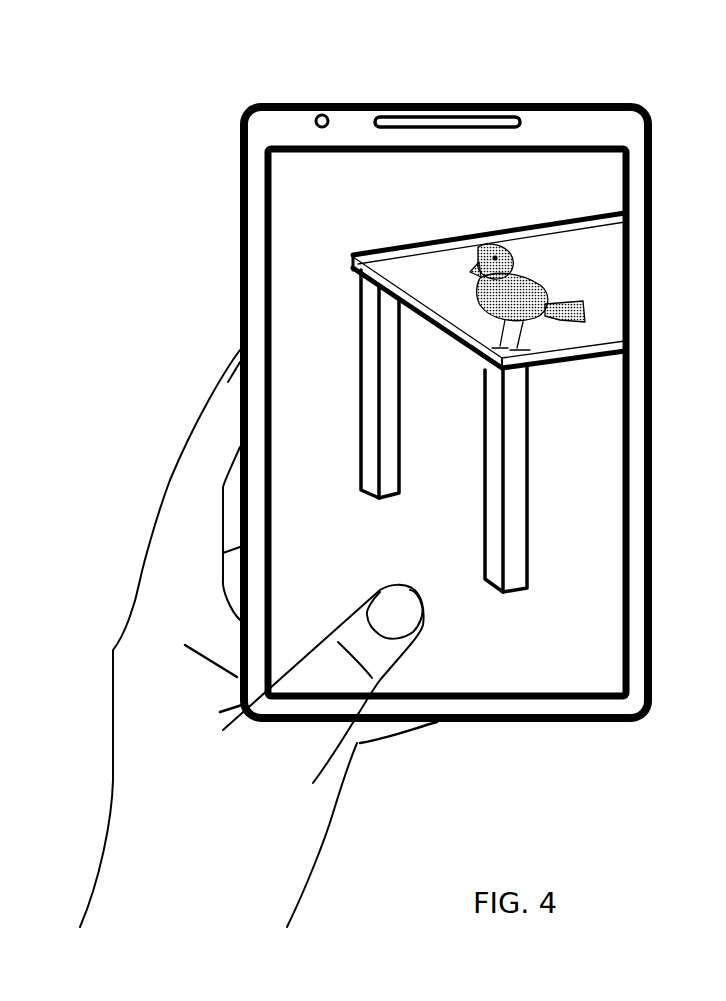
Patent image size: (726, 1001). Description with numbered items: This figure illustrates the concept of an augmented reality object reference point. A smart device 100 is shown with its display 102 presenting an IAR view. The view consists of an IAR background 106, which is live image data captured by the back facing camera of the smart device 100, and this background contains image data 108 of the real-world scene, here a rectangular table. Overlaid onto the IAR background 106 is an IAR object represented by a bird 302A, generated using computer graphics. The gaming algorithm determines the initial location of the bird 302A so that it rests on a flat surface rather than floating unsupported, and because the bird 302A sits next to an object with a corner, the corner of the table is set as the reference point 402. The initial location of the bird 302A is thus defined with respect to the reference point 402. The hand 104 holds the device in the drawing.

The smart device 100 is at (567, 100).
The display 102 is at (632, 268).
The hand of user 104 is at (174, 746).
The IAR background 106 is at (482, 208).
The image data 108 is at (497, 284).
The bird 302A is at (487, 318).
The reference point 402 is at (505, 371).